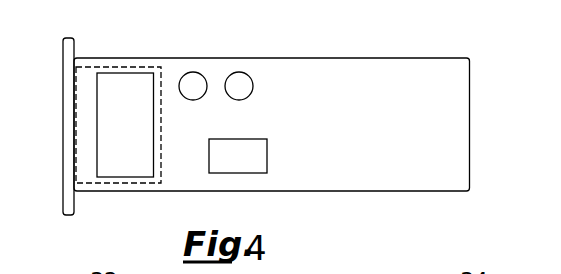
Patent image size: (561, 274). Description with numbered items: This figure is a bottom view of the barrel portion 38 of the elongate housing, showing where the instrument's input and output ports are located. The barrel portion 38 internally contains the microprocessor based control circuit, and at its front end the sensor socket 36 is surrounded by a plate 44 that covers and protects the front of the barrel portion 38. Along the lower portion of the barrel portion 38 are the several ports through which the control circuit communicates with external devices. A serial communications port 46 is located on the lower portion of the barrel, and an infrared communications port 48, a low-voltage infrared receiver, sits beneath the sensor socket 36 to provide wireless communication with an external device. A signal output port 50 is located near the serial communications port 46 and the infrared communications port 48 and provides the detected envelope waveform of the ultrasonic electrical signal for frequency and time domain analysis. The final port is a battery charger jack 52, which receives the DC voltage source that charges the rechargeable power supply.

The sensor socket 36 is at (110, 183).
The barrel portion 38 is at (462, 172).
The plate 44 is at (72, 216).
The RS 232 port 46 is at (260, 173).
The infrared communications port 48 is at (126, 73).
The signal output port 50 is at (238, 72).
The battery charger jack 52 is at (192, 72).